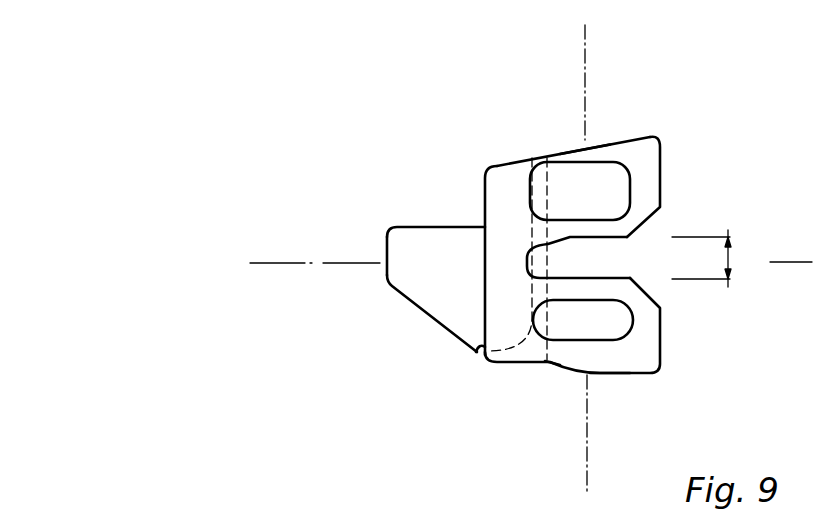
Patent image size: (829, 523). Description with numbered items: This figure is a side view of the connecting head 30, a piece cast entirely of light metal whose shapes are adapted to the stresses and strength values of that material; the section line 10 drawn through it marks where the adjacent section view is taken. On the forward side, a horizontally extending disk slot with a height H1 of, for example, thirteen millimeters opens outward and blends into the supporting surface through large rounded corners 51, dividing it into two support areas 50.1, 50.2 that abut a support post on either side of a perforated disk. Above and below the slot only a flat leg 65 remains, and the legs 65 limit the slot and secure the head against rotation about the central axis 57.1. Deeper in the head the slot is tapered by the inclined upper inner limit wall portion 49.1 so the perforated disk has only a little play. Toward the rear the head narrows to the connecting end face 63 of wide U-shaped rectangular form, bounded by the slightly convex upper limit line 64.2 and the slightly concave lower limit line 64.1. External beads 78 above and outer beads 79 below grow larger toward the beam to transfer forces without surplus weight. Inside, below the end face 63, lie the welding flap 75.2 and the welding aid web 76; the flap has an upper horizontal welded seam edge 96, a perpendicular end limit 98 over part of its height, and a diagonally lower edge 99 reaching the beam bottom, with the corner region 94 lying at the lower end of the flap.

The section line 10 is at (537, 37).
The connecting head 30 is at (546, 256).
The inclined upper inner limit wall portion 49.1 is at (548, 243).
The support area 50.1 is at (660, 172).
The support area 50.2 is at (663, 353).
The rounded corners 51 is at (602, 257).
The central axis 57.1 is at (277, 265).
The connecting end face 63 is at (485, 200).
The lower limit line 64.1 is at (555, 360).
The upper limit line 64.2 is at (507, 163).
The leg 65 is at (586, 230).
The welding flap 75.2 is at (406, 267).
The welding aid web 76 is at (483, 352).
The beads 78 is at (583, 153).
The outer beads 79 is at (592, 353).
The bottom corner 94 is at (492, 357).
The upper horizontal welded seam edge 96 is at (403, 227).
The end limits 98 is at (385, 270).
The diagonally lower edge 99 is at (417, 312).
The height H1 is at (718, 258).